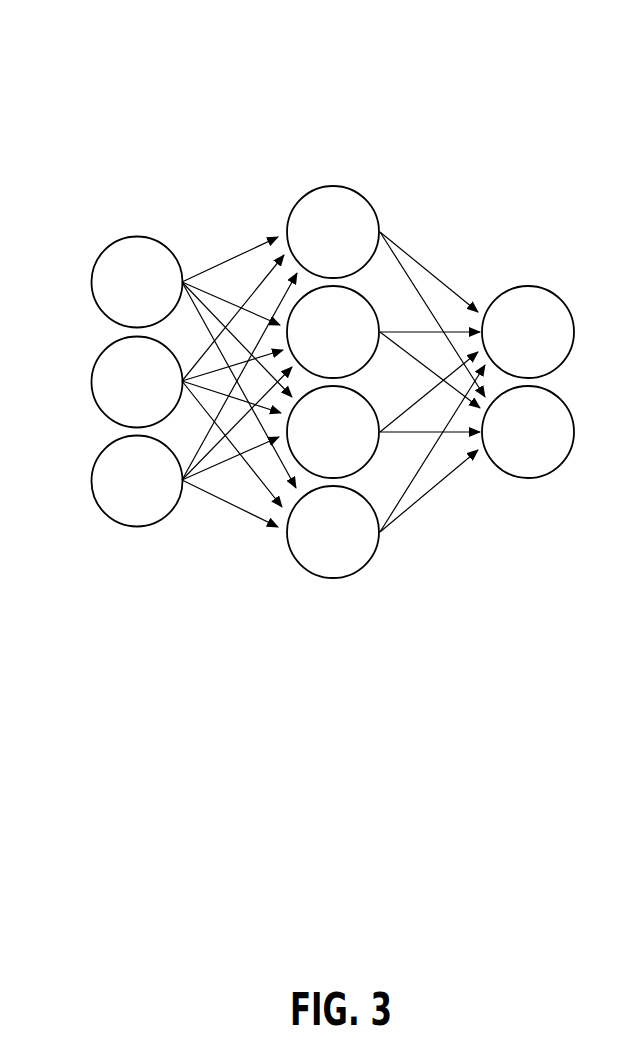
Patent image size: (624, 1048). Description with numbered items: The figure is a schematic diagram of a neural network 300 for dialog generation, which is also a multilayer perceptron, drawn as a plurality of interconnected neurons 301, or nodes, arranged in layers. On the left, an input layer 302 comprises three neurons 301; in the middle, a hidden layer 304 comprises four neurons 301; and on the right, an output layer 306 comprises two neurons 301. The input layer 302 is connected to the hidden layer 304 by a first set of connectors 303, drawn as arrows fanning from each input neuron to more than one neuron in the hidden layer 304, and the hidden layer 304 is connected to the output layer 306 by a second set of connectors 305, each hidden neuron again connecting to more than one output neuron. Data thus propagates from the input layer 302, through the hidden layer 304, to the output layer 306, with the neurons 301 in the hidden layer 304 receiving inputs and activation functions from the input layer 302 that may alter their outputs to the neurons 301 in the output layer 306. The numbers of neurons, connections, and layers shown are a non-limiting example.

The neural network 300 is at (489, 52).
The neurons 301 is at (98, 363).
The input layer 302 is at (137, 235).
The first set of connectors 303 is at (235, 257).
The hidden layer 304 is at (335, 185).
The second set of connectors 305 is at (403, 250).
The output layer 306 is at (535, 286).